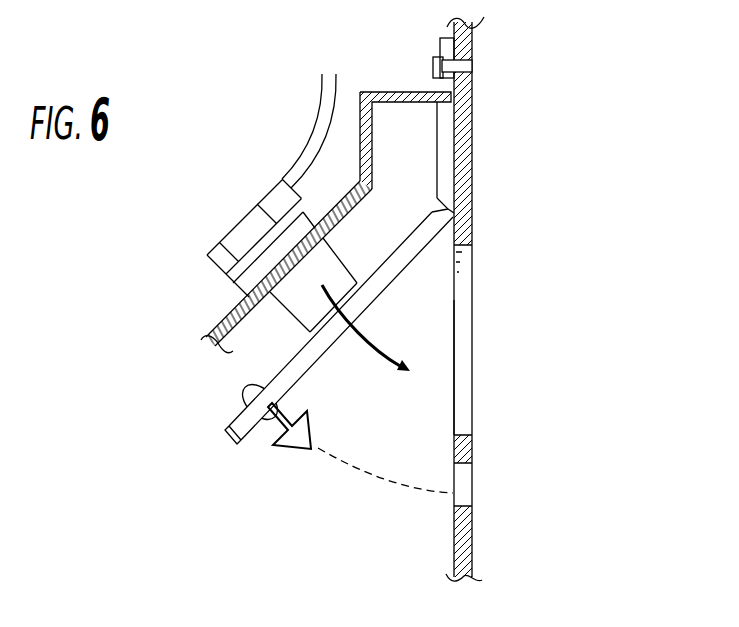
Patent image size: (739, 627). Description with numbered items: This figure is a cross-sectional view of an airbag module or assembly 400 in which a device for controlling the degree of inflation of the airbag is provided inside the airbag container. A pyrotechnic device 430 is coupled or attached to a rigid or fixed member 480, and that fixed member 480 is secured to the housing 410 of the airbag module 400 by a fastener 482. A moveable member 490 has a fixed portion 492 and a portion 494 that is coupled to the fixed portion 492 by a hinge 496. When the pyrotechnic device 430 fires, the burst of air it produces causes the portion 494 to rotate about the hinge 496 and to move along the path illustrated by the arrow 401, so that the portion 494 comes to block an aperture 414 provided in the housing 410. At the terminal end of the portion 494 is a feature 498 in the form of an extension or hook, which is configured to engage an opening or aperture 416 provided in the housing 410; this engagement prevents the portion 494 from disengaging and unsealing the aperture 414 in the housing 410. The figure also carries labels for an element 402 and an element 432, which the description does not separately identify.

The airbag module 400 is at (218, 104).
The arrow 401 is at (360, 338).
The mounting surface 402 is at (407, 490).
The housing 410 is at (472, 235).
The aperture 414 is at (472, 330).
The opening or aperture 416 is at (462, 485).
The pyrotechnic device 430 is at (318, 262).
The cable 432 is at (338, 113).
The rigid or fixed member 480 is at (373, 157).
The fastener 482 is at (442, 39).
The moveable member 490 is at (232, 431).
The fixed portion 492 is at (443, 136).
The portion 494 is at (384, 282).
The hinge 496 is at (473, 221).
The feature 498 is at (292, 440).